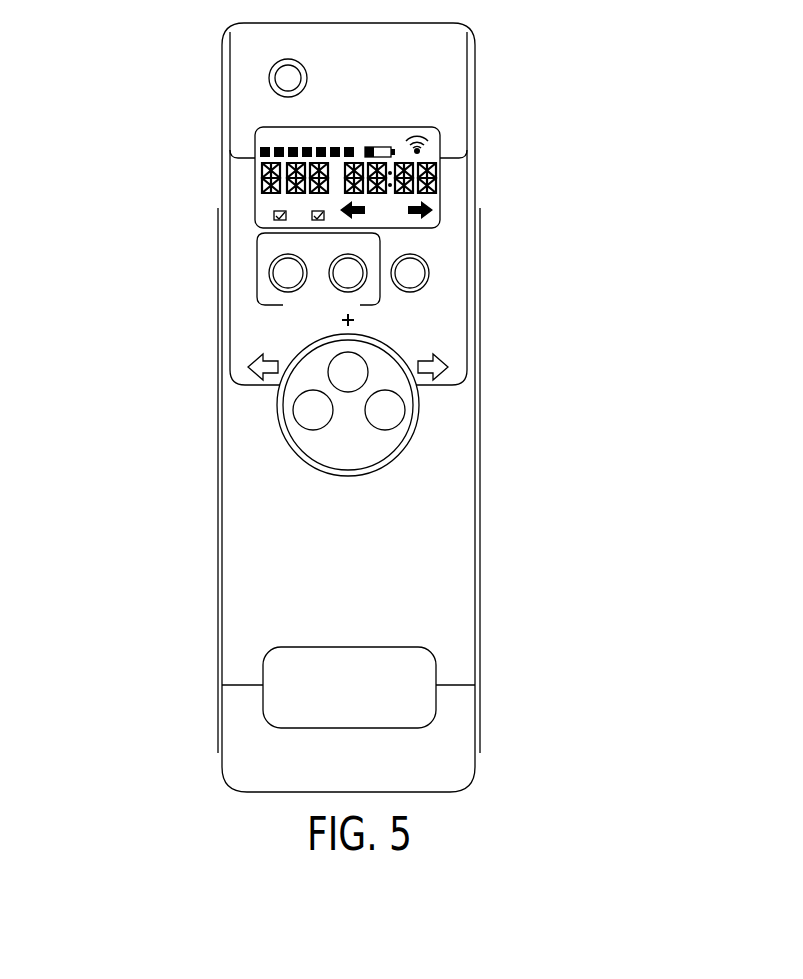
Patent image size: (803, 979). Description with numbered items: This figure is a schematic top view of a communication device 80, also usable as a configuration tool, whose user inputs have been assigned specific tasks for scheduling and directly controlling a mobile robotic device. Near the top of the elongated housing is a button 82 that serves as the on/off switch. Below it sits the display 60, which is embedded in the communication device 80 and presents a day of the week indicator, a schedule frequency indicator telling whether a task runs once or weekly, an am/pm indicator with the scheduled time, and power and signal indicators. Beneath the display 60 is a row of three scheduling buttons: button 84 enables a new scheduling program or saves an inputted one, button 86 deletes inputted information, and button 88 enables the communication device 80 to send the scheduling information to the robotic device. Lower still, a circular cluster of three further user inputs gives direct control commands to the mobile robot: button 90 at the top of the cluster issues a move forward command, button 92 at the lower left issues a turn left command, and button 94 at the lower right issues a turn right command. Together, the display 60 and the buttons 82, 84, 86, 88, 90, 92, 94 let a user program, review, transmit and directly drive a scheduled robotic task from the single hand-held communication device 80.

The communication device 80 is at (84, 121).
The button 82 is at (278, 72).
The display 60 is at (442, 132).
The button 84 is at (270, 275).
The button 86 is at (335, 270).
The button 88 is at (428, 275).
The button 90 is at (337, 360).
The button 92 is at (295, 415).
The button 94 is at (398, 410).